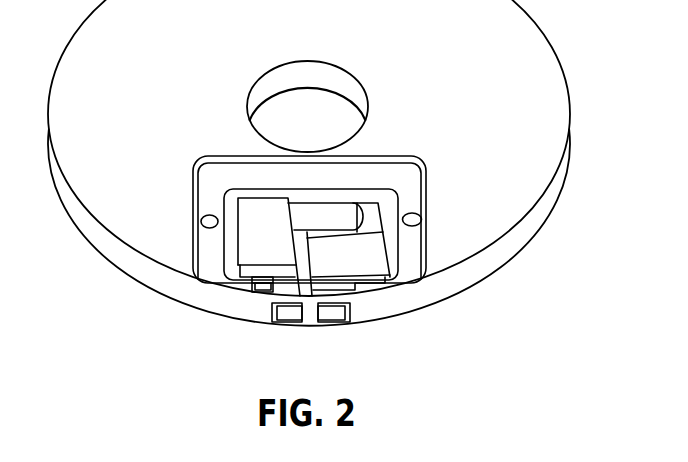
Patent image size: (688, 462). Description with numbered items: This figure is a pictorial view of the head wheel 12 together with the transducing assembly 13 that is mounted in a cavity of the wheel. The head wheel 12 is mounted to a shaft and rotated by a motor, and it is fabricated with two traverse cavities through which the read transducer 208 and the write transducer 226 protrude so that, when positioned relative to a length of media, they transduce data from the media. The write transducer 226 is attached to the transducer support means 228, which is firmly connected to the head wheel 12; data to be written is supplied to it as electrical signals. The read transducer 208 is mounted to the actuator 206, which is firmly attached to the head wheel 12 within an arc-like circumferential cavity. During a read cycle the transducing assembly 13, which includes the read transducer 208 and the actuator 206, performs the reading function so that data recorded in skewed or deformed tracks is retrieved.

The head wheel 12 is at (436, 82).
The transducing assembly 13 is at (235, 240).
The actuator 206 is at (280, 252).
The transducer support means 228 is at (360, 268).
The read transducer 208 is at (293, 322).
The write transducer 226 is at (330, 322).